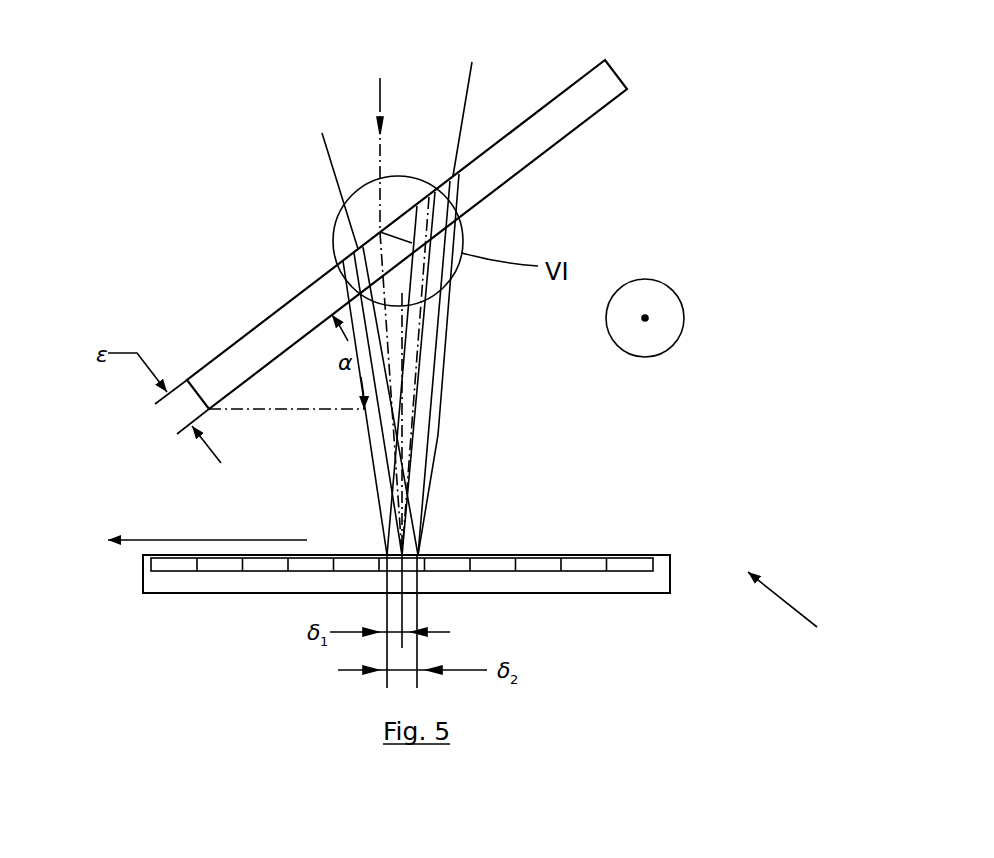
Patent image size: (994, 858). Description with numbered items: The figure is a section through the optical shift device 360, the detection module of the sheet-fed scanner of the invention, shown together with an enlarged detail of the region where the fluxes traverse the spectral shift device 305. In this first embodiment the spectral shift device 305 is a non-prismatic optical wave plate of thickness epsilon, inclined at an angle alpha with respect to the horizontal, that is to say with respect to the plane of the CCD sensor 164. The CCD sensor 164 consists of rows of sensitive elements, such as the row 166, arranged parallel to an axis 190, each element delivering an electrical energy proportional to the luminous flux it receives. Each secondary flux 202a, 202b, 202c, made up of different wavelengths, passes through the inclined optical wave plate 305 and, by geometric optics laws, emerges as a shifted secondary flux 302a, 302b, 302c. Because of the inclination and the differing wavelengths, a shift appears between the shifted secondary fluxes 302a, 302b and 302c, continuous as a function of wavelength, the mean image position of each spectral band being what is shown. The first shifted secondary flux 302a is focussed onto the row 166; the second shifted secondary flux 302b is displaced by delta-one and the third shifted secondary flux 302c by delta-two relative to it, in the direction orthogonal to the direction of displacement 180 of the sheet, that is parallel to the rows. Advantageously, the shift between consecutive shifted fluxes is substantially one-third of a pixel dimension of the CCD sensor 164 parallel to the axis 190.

The spectral shift device 305 is at (570, 103).
The secondary flux 202a is at (383, 96).
The secondary flux 202b is at (382, 101).
The secondary flux 202c is at (383, 96).
The first shifted secondary flux 302a is at (385, 470).
The second shifted secondary flux 302b is at (402, 357).
The third shifted secondary flux 302c is at (420, 510).
The CCD sensor 164 is at (590, 587).
The row 166 is at (600, 563).
The axis 190 is at (165, 540).
The direction of displacement 180 is at (685, 313).
The optical shift device 360 is at (797, 617).